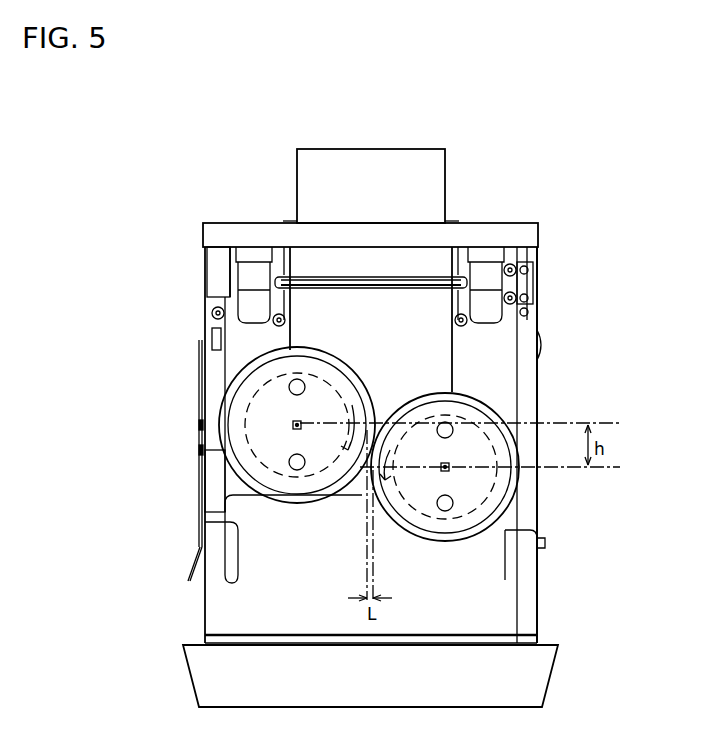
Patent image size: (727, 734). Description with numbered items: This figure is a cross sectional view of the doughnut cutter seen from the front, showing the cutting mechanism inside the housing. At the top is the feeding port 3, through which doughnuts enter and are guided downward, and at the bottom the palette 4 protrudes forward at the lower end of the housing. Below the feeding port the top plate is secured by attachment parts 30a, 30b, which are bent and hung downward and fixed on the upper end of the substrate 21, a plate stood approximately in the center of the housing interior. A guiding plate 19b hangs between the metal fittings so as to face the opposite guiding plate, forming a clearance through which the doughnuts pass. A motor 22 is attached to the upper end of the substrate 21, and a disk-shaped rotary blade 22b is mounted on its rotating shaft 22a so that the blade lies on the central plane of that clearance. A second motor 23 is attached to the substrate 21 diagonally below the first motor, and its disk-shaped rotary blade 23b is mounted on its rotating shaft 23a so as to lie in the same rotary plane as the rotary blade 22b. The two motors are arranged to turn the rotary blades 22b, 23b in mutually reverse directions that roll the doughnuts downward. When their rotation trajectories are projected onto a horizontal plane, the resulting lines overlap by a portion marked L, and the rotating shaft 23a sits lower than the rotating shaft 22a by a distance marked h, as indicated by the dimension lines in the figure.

The feeding port 3 is at (368, 148).
The palette 4 is at (305, 643).
The guiding plate 19b is at (452, 355).
The substrate 21 is at (537, 380).
The motor 22 is at (260, 449).
The rotating shaft 22a is at (299, 427).
The rotary blade 22b is at (306, 504).
The motor 23 is at (481, 488).
The rotating shaft 23a is at (443, 469).
The rotary blade 23b is at (455, 540).
The attachment part 30a is at (486, 323).
The attachment part 30b is at (252, 323).